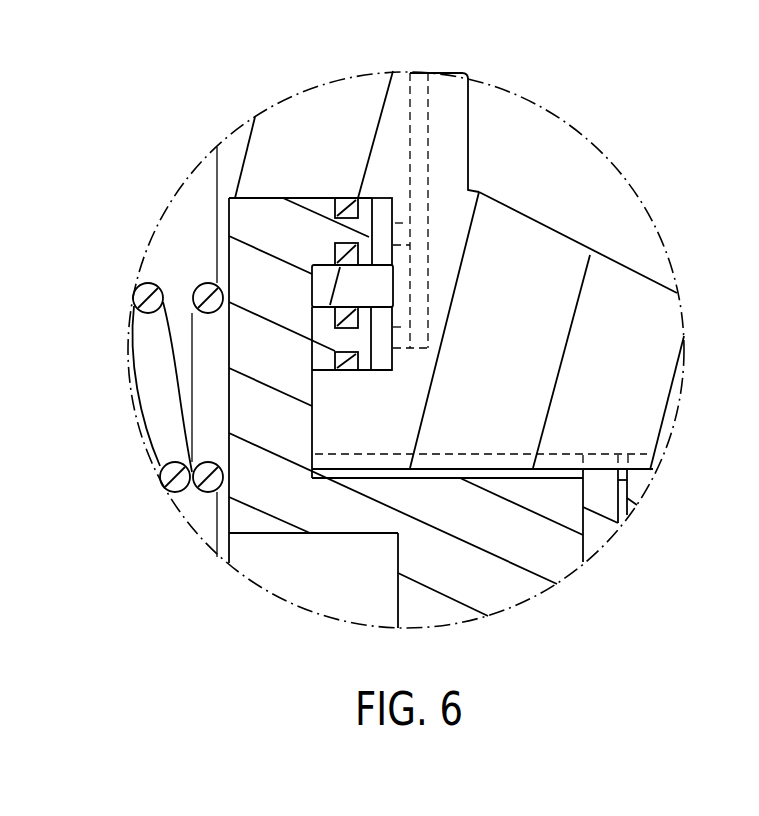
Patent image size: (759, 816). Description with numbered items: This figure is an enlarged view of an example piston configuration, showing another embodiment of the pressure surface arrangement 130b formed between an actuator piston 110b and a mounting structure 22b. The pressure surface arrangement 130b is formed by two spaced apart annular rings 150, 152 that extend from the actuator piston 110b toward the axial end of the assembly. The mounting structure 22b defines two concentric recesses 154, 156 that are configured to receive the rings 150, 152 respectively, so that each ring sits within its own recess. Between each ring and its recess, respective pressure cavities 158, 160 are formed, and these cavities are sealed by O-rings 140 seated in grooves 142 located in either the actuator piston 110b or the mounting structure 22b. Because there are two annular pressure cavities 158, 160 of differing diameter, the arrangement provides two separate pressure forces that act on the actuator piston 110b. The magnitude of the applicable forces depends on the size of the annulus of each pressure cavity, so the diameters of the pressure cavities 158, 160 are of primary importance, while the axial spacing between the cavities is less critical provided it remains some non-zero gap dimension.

The mounting structure 22b is at (633, 296).
The actuator piston 110b is at (243, 220).
The pressure surface arrangement 130b is at (383, 186).
The O-ring 140 is at (348, 265).
The groove 142 is at (478, 287).
The annular ring 150 is at (325, 373).
The annular ring 152 is at (323, 203).
The recess 154 is at (392, 322).
The recess 156 is at (387, 197).
The pressure cavity 158 is at (382, 373).
The pressure cavity 160 is at (387, 242).